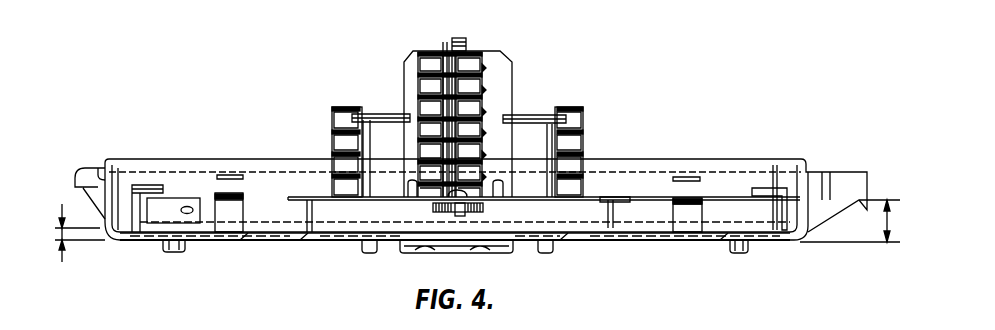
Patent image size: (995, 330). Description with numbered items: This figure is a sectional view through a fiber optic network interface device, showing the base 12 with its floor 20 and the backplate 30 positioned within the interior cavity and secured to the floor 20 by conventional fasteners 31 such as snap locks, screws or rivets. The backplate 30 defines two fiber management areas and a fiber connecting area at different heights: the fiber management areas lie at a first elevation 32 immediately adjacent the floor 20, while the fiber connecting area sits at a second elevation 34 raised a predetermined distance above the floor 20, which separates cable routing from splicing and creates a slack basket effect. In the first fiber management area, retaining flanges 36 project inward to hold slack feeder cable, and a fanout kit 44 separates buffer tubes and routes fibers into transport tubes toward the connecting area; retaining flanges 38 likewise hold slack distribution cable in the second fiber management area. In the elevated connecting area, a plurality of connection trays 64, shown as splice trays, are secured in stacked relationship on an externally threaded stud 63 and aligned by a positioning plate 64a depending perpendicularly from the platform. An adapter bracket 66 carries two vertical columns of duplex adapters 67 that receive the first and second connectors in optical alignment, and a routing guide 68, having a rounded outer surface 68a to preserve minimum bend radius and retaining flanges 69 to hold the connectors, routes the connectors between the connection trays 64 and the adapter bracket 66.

The base 12 is at (760, 243).
The floor 20 is at (287, 241).
The backplate 30 is at (643, 234).
The fasteners 31 is at (172, 249).
The first elevation 32 is at (65, 234).
The second elevation 34 is at (890, 200).
The retaining flanges 36 is at (146, 183).
The retaining flanges 38 is at (757, 190).
The fanout kit 44 is at (182, 197).
The externally threaded stud 63 is at (465, 40).
The connection tray 64 is at (583, 118).
The positioning plate 64a is at (500, 82).
The adapter bracket 66 is at (440, 46).
The adapters 67 is at (430, 84).
The routing guide 68 is at (389, 183).
The outer surface 68a is at (407, 157).
The retaining flanges 69 is at (522, 128).